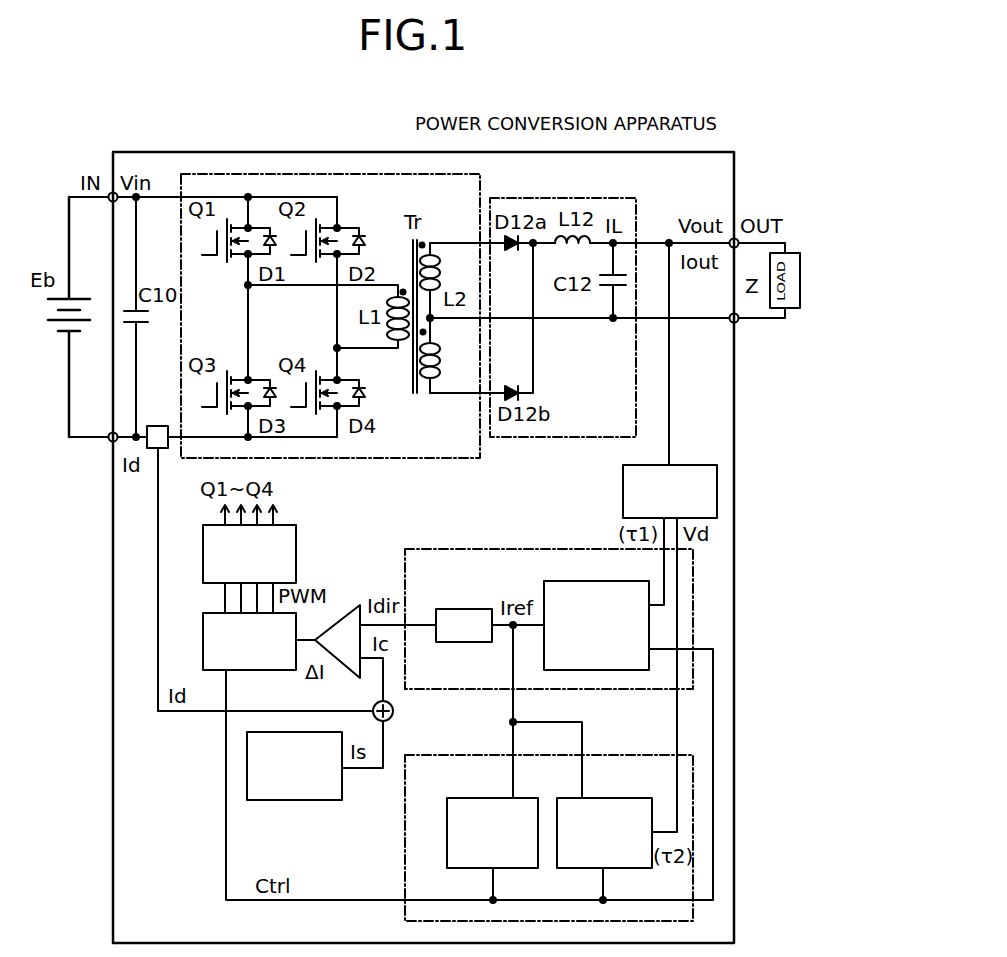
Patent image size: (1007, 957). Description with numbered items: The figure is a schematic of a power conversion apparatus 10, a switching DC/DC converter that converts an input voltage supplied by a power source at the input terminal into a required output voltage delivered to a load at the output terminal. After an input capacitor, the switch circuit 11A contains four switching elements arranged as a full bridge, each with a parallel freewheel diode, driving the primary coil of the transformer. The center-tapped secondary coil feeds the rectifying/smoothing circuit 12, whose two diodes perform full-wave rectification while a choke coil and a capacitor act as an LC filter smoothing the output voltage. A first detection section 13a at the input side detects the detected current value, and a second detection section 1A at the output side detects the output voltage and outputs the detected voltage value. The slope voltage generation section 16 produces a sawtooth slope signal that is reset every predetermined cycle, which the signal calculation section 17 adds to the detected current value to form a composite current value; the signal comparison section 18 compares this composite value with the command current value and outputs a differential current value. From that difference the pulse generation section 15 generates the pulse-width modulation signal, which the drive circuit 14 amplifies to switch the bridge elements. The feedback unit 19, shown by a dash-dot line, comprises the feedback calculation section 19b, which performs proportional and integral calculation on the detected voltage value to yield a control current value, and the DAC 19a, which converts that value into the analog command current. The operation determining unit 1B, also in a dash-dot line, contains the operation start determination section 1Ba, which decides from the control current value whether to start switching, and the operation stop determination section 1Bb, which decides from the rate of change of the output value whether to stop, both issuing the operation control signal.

The power conversion apparatus 10 is at (348, 152).
The switch circuit 11A is at (300, 174).
The rectifying/smoothing circuit 12 is at (636, 225).
The first detection section 13a is at (155, 426).
The drive circuit 14 is at (203, 558).
The pulse generation section 15 is at (203, 645).
The slope voltage generation section 16 is at (338, 616).
The signal calculation section 17 is at (376, 704).
The signal comparison section 18 is at (308, 800).
The feedback unit 19 is at (490, 549).
The DAC 19a is at (462, 609).
The feedback calculation section 19b is at (580, 581).
The second detection section 1A is at (623, 492).
The operation determining unit 1B is at (492, 755).
The operation start determination section 1Ba is at (493, 798).
The operation stop determination section 1Bb is at (604, 798).